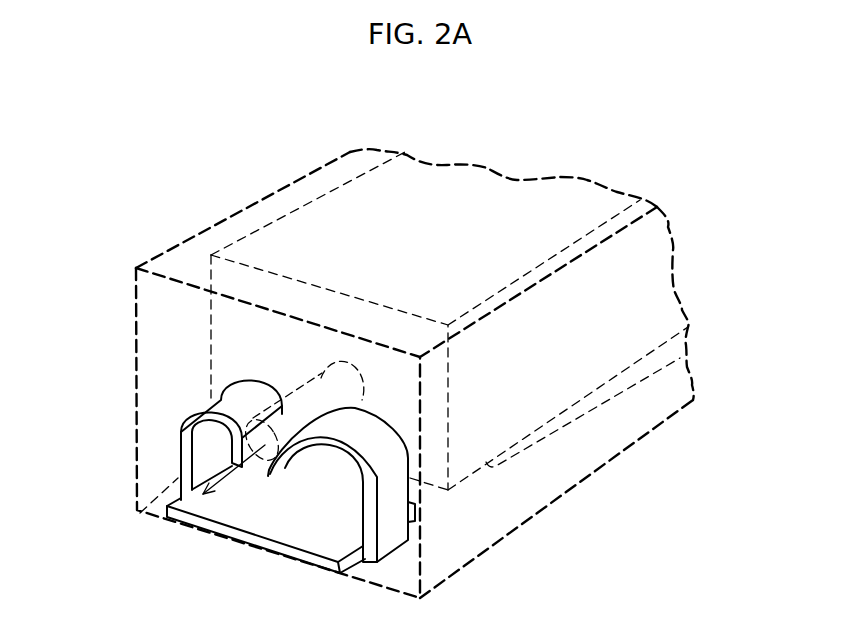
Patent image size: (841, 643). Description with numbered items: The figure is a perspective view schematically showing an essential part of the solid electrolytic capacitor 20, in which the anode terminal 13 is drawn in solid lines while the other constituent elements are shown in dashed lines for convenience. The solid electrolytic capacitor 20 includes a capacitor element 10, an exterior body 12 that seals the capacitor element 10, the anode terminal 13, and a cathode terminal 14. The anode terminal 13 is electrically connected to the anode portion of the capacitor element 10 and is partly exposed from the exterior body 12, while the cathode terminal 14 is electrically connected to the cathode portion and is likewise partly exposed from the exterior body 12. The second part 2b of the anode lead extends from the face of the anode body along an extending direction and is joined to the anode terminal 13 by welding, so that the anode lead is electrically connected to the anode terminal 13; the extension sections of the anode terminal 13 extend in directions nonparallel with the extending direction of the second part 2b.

The solid electrolytic capacitor 20 is at (260, 140).
The capacitor element 10 is at (475, 220).
The exterior body 12 is at (480, 518).
The anode terminal 13 is at (300, 522).
The cathode terminal 14 is at (660, 361).
The second part 2b is at (318, 392).